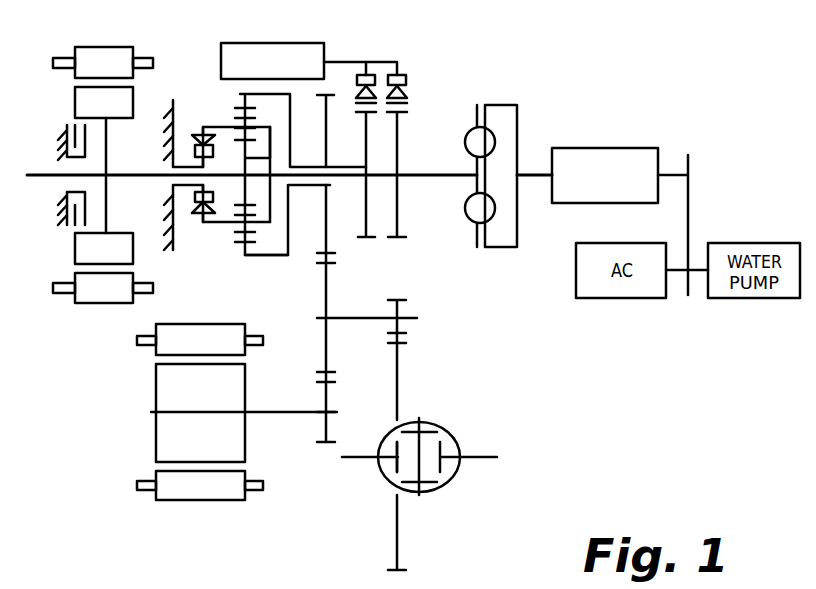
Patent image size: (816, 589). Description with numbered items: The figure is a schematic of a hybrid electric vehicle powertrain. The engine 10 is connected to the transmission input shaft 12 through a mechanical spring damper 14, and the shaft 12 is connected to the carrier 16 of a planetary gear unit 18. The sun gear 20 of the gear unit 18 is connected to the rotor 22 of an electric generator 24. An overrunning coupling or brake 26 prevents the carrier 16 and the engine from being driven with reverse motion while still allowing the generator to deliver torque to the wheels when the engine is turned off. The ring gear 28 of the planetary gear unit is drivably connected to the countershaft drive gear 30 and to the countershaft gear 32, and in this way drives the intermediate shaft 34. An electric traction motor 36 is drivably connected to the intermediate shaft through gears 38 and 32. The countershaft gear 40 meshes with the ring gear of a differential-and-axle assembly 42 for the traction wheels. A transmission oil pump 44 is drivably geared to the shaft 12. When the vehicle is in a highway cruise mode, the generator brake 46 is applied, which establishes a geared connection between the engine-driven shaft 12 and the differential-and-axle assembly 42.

The engine 10 is at (630, 148).
The transmission input shaft 12 is at (420, 177).
The mechanical spring damper 14 is at (478, 212).
The carrier 16 is at (215, 125).
The planetary gear unit 18 is at (236, 94).
The sun gear 20 is at (272, 158).
The rotor 22 is at (78, 103).
The electric generator 24 is at (140, 47).
The overrunning coupling or brake 26 is at (172, 127).
The ring gear 28 is at (265, 256).
The countershaft drive gear 30 is at (327, 238).
The countershaft gear 32 is at (326, 335).
The intermediate shaft 34 is at (355, 322).
The electric traction motor 36 is at (148, 427).
The gear 38 is at (325, 445).
The countershaft gear 40 is at (400, 323).
The differential-and-axle assembly 42 is at (450, 492).
The transmission oil pump 44 is at (307, 43).
The generator brake 46 is at (73, 192).